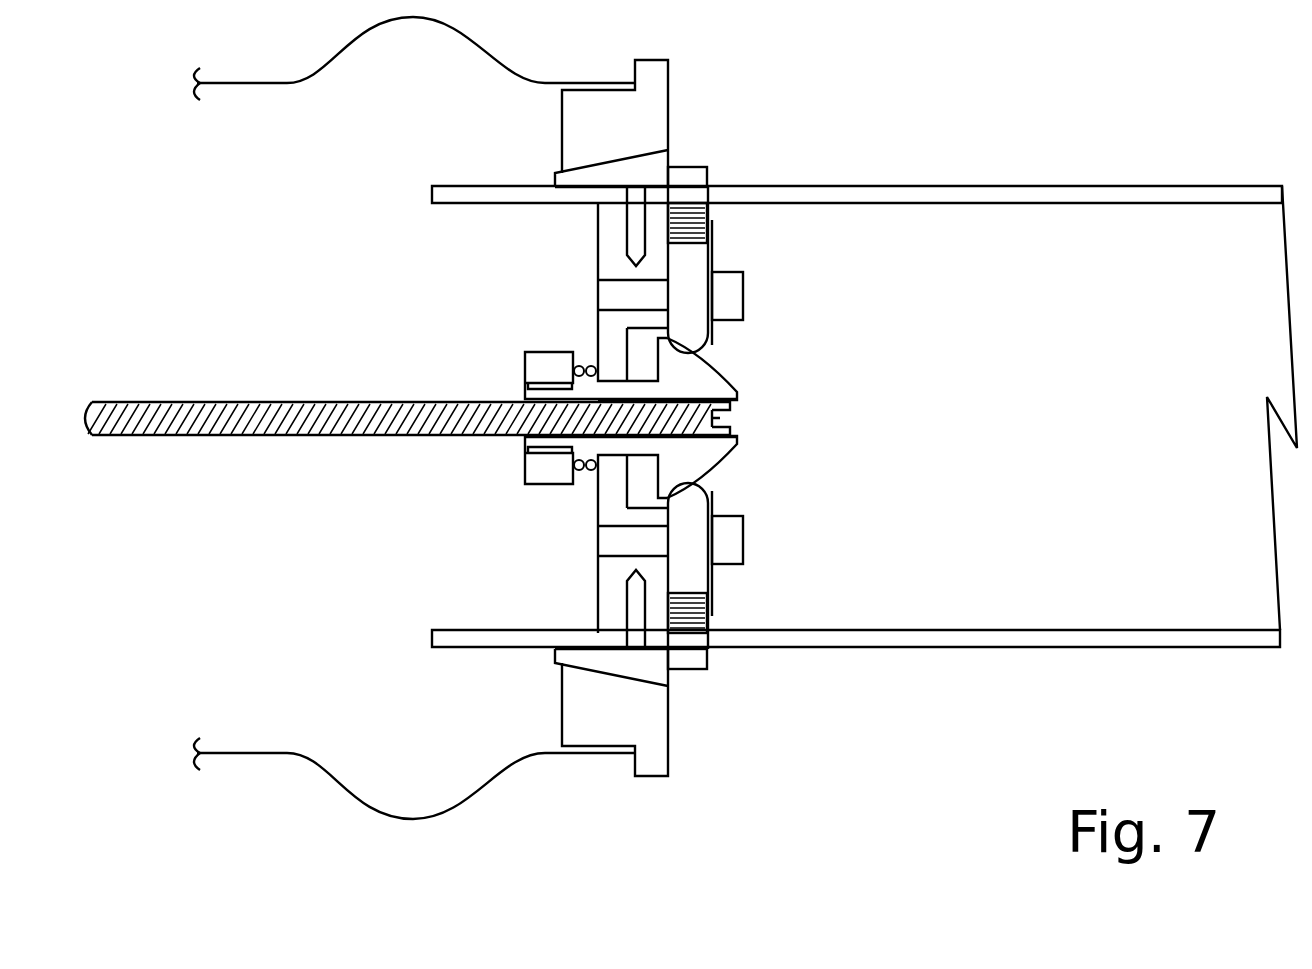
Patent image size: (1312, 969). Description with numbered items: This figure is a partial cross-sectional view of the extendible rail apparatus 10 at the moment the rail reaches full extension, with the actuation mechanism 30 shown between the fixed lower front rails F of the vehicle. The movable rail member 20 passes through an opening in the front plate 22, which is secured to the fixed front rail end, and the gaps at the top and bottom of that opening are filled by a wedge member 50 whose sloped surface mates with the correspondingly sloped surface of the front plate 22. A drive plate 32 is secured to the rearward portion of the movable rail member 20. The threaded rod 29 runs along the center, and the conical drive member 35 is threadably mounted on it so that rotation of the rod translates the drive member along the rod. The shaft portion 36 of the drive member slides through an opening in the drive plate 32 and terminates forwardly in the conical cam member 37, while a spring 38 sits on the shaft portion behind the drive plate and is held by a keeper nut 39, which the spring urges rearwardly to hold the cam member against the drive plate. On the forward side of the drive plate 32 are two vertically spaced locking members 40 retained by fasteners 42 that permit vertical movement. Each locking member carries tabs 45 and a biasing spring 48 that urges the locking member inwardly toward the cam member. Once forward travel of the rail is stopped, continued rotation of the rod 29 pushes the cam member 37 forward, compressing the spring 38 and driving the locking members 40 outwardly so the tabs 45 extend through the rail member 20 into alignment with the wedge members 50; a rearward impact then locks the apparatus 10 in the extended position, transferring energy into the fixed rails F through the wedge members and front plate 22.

The extendible rail apparatus 10 is at (950, 118).
The movable rail member 20 is at (1072, 186).
The front plate 22 is at (655, 70).
The threaded rod 29 is at (283, 437).
The actuation mechanism 30 is at (905, 342).
The drive plate 32 is at (605, 572).
The conical drive member 35 is at (495, 460).
The shaft portion 36 is at (570, 385).
The conical cam member 37 is at (700, 385).
The spring 38 is at (582, 476).
The keeper nut 39 is at (533, 367).
The locking members 40 is at (690, 262).
The fasteners 42 is at (737, 290).
The tabs 45 is at (692, 172).
The biasing spring 48 is at (707, 203).
The wedge member 50 is at (651, 162).
The lower front rail F is at (287, 83).